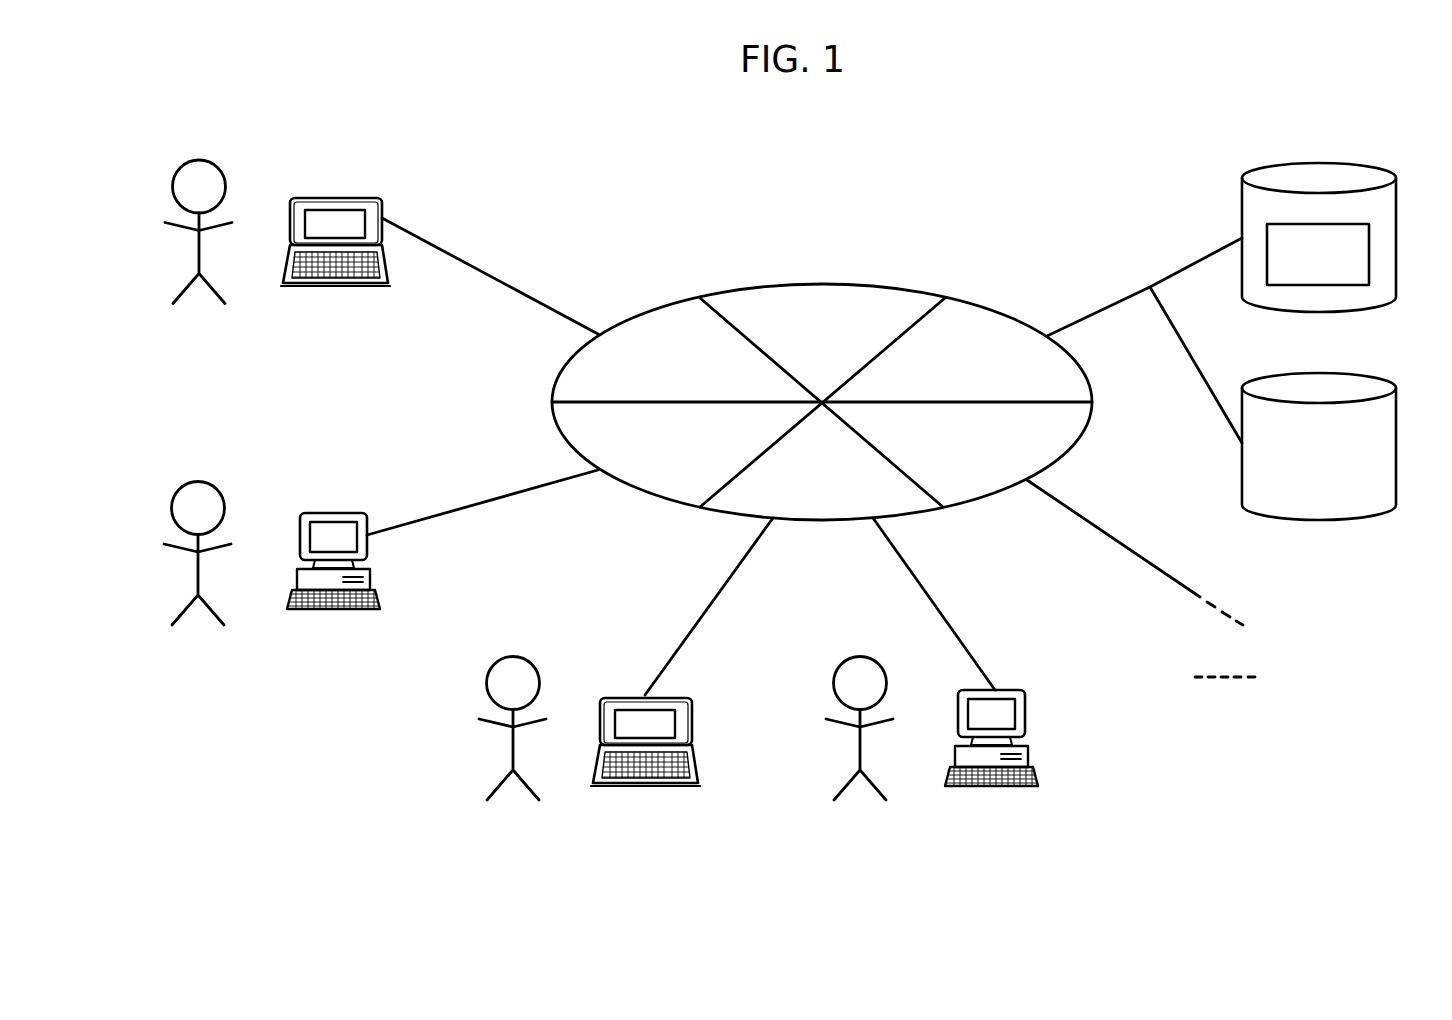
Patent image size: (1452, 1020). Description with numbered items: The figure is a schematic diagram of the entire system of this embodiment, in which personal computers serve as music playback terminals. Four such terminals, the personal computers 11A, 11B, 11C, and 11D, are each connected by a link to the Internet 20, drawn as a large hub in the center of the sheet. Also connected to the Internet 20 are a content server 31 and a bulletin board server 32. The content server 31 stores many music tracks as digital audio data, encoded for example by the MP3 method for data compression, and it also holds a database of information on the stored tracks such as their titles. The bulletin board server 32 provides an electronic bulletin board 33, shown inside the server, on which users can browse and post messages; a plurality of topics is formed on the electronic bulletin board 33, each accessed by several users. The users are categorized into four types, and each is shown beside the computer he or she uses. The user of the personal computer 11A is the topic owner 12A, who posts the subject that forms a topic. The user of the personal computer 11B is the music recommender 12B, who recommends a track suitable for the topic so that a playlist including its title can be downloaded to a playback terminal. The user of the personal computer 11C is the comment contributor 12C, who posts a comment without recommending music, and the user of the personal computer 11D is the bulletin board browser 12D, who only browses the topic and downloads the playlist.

The personal computer 11A is at (312, 287).
The personal computer 11B is at (343, 611).
The personal computer 11C is at (622, 787).
The personal computer 11D is at (1001, 788).
The topic owner 12A is at (192, 258).
The music recommender 12B is at (191, 579).
The comment contributor 12C is at (506, 754).
The bulletin board browser 12D is at (853, 754).
The Internet 20 is at (823, 282).
The content server 31 is at (1318, 372).
The bulletin board server 32 is at (1347, 217).
The electronic bulletin board 33 is at (1369, 253).